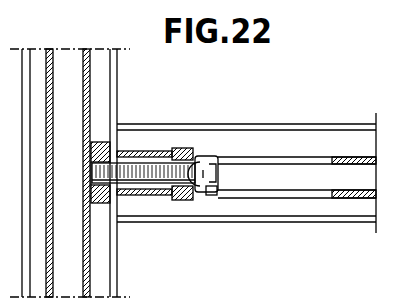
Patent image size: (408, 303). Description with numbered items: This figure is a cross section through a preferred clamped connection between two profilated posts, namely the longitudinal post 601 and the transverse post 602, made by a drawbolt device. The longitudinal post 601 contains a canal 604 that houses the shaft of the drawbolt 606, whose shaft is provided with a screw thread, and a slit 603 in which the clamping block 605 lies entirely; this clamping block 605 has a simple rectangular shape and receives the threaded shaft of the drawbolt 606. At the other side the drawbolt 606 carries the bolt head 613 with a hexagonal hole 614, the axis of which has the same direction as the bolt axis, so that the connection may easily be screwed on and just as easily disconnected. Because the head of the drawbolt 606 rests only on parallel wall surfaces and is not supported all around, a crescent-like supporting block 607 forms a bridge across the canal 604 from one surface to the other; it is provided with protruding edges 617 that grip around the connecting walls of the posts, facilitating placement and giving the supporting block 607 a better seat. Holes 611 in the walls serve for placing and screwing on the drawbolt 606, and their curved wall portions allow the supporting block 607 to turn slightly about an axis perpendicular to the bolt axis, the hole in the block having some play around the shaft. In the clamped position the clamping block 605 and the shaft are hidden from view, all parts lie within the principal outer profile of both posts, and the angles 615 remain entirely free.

The longitudinal post 601 is at (36, 78).
The canal 604 is at (67, 77).
The slit 603 is at (98, 77).
The clamping block 605 is at (101, 146).
The drawbolt 606 is at (137, 158).
The protruding edges 617 is at (174, 151).
The supporting block 607 is at (192, 152).
The bolt head 613 is at (208, 157).
The holes in the walls 611 is at (267, 160).
The transverse post 602 is at (258, 210).
The angles 615 is at (118, 225).
The hexagonal hole 614 is at (212, 193).